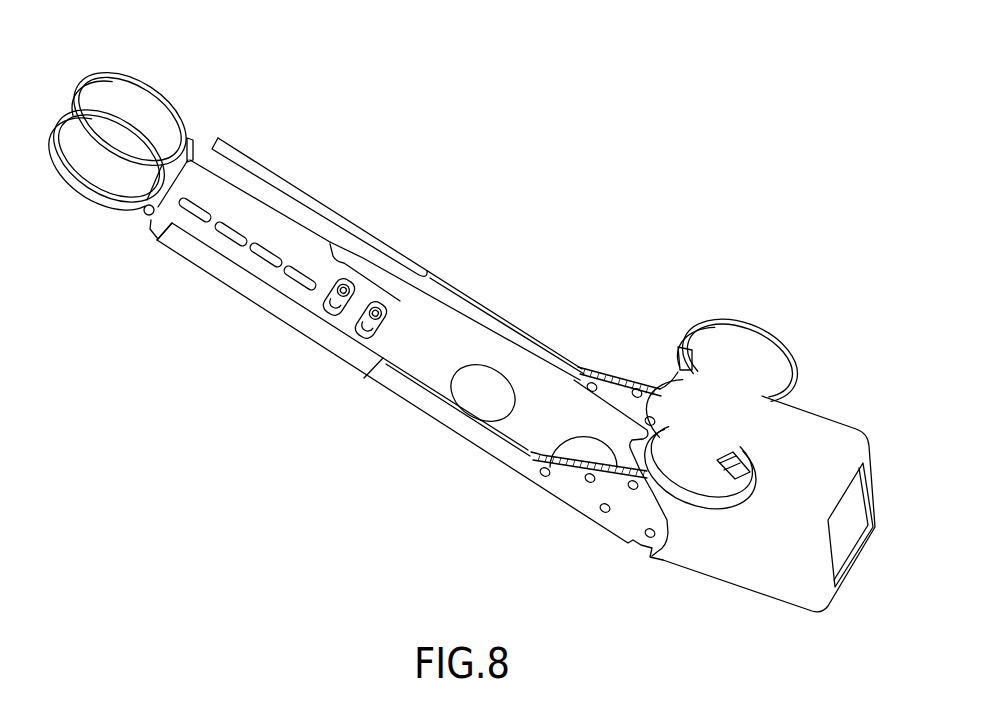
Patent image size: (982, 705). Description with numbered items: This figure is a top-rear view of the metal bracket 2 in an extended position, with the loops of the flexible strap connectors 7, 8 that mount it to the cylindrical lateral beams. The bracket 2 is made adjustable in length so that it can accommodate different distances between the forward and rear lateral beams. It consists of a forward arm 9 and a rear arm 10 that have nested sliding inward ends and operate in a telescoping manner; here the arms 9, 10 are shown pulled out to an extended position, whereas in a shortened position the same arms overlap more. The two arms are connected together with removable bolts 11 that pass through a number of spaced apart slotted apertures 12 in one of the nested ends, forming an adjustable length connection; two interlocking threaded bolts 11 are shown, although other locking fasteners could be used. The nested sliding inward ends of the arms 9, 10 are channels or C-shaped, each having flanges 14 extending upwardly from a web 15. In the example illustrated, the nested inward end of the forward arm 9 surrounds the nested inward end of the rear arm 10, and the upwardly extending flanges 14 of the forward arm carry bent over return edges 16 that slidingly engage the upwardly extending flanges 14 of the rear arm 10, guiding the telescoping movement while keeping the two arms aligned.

The bracket 2 is at (480, 464).
The flexible strap connector 7 is at (131, 72).
The flexible strap connector 8 is at (747, 327).
The forward arm 9 is at (280, 173).
The rear arm 10 is at (479, 304).
The bolt 11 is at (350, 288).
The slotted aperture 12 is at (196, 200).
The flange 14 is at (523, 348).
The web 15 is at (272, 231).
The bent over return edge 16 is at (343, 218).